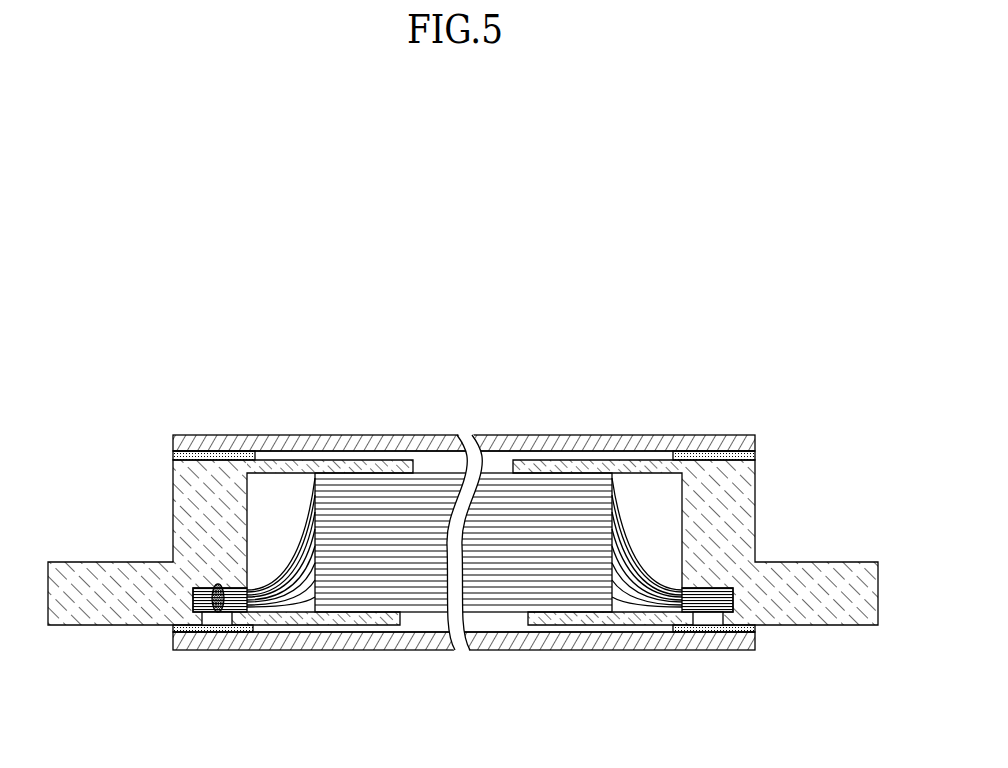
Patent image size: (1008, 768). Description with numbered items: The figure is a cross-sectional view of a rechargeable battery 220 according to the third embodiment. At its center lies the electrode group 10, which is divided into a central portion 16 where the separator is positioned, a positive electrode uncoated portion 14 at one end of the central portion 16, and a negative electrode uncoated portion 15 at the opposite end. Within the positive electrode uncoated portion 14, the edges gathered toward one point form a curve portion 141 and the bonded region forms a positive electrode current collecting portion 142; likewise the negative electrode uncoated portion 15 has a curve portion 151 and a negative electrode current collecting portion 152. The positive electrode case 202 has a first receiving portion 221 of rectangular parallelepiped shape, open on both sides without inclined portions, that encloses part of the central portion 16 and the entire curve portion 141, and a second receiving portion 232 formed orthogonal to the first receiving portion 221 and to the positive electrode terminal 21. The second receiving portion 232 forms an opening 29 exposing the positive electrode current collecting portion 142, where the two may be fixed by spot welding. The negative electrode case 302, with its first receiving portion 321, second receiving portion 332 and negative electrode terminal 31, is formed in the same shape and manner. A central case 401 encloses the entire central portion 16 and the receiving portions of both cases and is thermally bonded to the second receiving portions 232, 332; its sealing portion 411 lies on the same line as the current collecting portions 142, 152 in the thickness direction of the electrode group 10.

The rechargeable battery 220 is at (450, 179).
The central case 401 is at (315, 442).
The sealing portion 411 is at (209, 451).
The first receiving portion 221 is at (390, 460).
The first receiving portion 321 is at (563, 460).
The second receiving portion 232 is at (188, 490).
The second receiving portion 332 is at (743, 488).
The positive electrode terminal 21 is at (63, 573).
The negative electrode terminal 31 is at (853, 577).
The positive electrode case 202 is at (73, 632).
The negative electrode case 302 is at (850, 634).
The electrode group 10 is at (422, 618).
The central portion 16 is at (565, 596).
The positive electrode uncoated portion 14 is at (259, 613).
The curve portion 141 is at (303, 600).
The positive electrode current collecting portion 142 is at (240, 604).
The opening 29 is at (218, 620).
The negative electrode uncoated portion 15 is at (678, 613).
The curve portion 151 is at (657, 600).
The negative electrode current collecting portion 152 is at (723, 602).